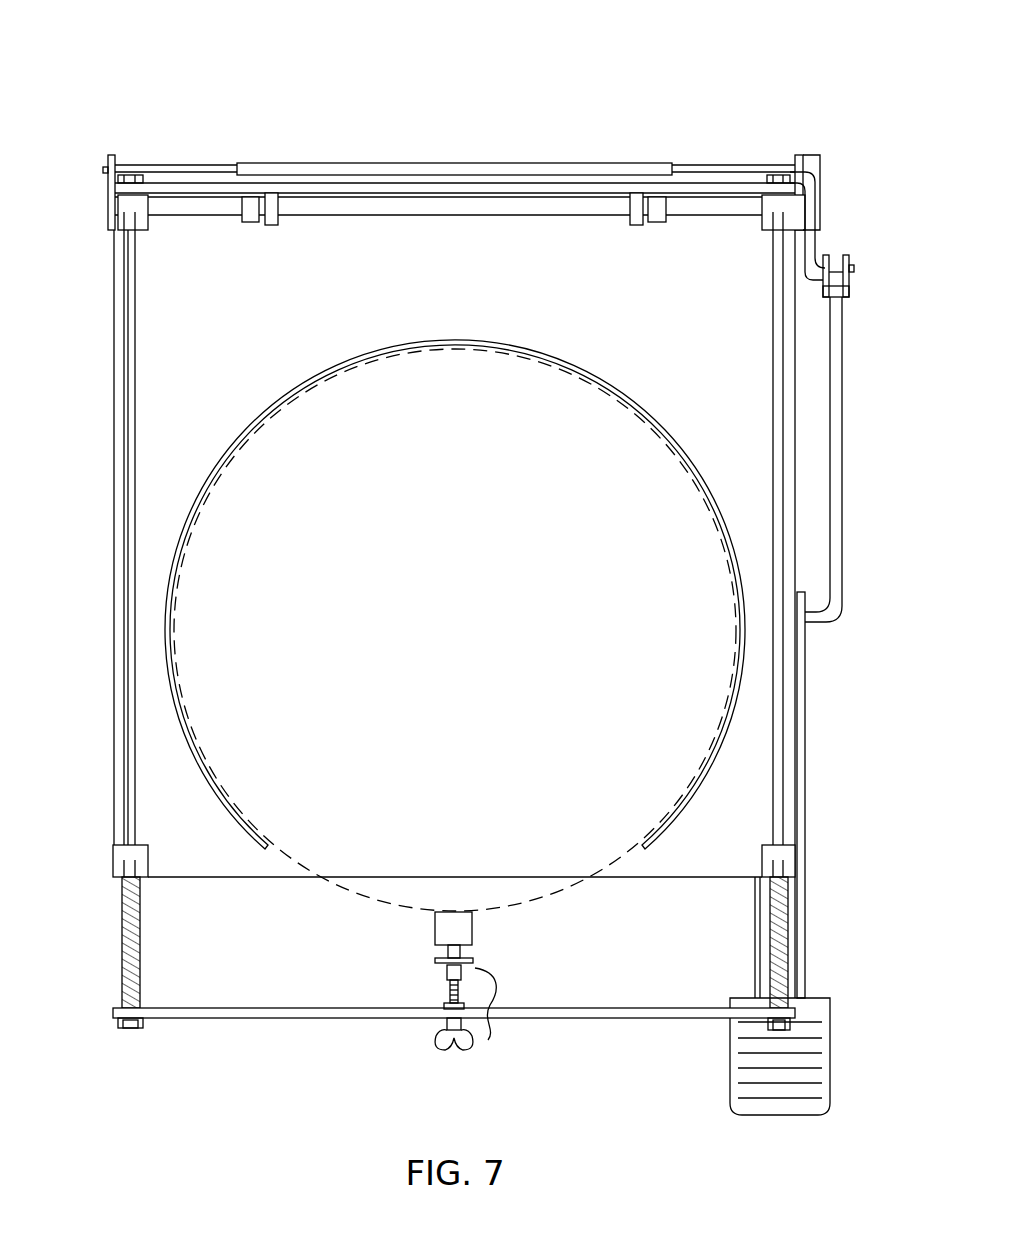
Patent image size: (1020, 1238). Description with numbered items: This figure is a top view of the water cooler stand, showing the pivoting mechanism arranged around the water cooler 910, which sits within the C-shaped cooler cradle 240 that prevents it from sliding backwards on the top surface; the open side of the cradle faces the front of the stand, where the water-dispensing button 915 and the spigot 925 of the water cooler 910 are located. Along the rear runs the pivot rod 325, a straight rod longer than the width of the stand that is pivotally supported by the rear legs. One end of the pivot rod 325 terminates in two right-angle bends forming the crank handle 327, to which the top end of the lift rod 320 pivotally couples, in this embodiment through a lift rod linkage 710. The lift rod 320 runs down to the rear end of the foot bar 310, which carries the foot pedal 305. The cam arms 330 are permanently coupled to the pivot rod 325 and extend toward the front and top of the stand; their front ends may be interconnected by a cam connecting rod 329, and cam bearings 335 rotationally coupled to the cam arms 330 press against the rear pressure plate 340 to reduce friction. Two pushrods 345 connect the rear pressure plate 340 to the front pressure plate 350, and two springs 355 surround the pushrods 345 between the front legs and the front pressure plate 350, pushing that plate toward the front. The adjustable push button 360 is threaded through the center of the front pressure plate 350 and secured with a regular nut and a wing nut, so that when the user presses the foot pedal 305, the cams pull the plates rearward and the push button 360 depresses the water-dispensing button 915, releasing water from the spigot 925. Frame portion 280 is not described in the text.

The cooler cradle 240 is at (182, 732).
The frame assembly 280 is at (165, 285).
The foot pedal 305 is at (820, 1078).
The foot bar 310 is at (797, 745).
The lift rod 320 is at (838, 482).
The pivot rod 325 is at (730, 165).
The crank handle 327 is at (818, 240).
The cam connecting rod 329 is at (462, 205).
The cam arms 330 is at (250, 220).
The cam bearings 335 is at (278, 225).
The rear pressure plate 340 is at (160, 193).
The pushrods 345 is at (128, 478).
The front pressure plate 350 is at (178, 1018).
The springs 355 is at (128, 930).
The adjustable push button 360 is at (478, 1042).
The lift rod linkage 710 is at (848, 290).
The water cooler 910 is at (295, 862).
The water-dispensing button 915 is at (438, 962).
The spigot 925 is at (473, 930).